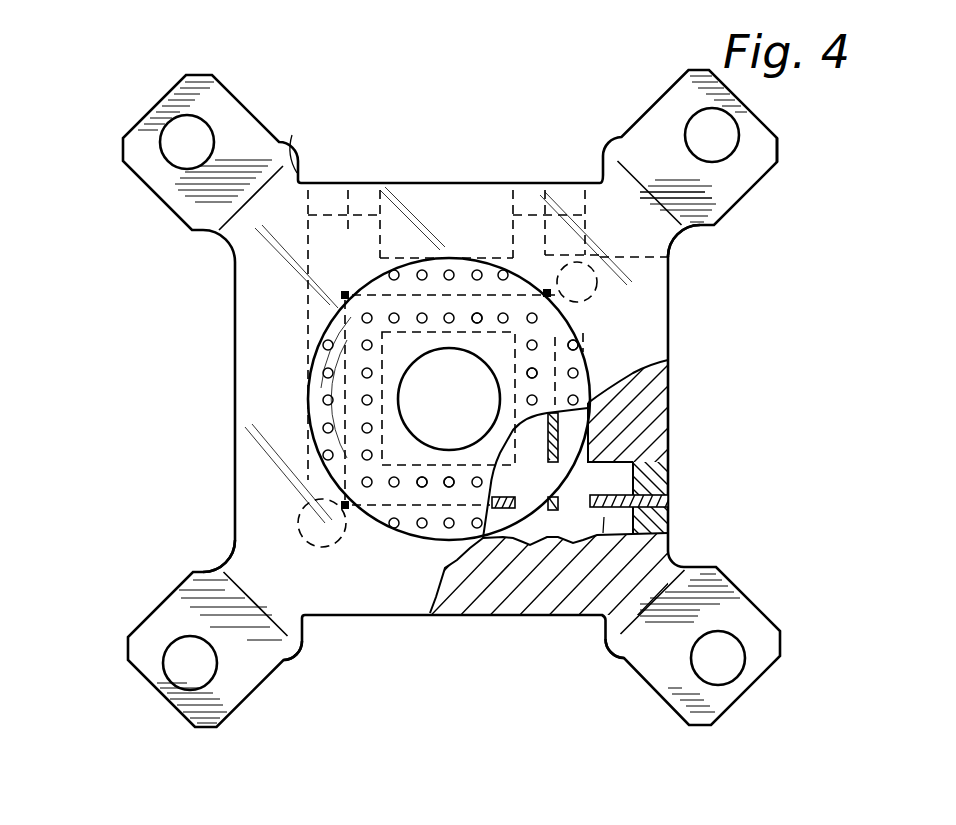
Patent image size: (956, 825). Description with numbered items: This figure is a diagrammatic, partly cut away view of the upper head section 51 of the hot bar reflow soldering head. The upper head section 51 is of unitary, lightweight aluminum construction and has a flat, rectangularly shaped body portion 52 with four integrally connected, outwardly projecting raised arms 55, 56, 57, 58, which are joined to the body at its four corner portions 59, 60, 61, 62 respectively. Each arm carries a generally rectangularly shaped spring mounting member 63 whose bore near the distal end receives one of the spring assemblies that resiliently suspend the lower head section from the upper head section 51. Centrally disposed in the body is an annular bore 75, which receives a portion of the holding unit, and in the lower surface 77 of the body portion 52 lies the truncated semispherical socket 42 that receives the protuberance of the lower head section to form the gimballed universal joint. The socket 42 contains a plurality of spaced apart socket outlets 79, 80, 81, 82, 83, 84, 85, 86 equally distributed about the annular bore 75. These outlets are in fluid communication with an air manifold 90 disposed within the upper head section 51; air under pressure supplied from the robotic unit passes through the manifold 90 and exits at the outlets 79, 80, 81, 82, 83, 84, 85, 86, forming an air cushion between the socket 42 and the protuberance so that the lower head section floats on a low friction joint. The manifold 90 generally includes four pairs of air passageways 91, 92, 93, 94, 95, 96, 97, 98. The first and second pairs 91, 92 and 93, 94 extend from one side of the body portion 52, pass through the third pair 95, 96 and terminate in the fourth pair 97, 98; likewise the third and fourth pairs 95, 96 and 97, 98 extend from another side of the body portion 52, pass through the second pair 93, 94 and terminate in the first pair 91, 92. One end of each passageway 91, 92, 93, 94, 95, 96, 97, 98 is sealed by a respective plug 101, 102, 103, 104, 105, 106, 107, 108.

The socket 42 is at (312, 398).
The upper head section 51 is at (126, 722).
The body portion 52 is at (235, 292).
The arm 55 is at (794, 601).
The arm 56 is at (128, 612).
The arm 57 is at (240, 88).
The arm 58 is at (654, 84).
The corner portion 59 is at (617, 628).
The corner portion 60 is at (248, 568).
The corner portion 61 is at (290, 136).
The corner portion 62 is at (700, 240).
The spring mounting member 63 is at (760, 643).
The annular bore 75 is at (438, 366).
The lower surface 77 is at (311, 640).
The socket outlet 79 is at (325, 425).
The socket outlet 80 is at (335, 463).
The socket outlet 81 is at (449, 313).
The socket outlet 82 is at (477, 313).
The socket outlet 83 is at (578, 345).
The socket outlet 84 is at (585, 362).
The socket outlet 85 is at (447, 487).
The socket outlet 86 is at (421, 487).
The air manifold 90 is at (700, 512).
The air passageway 91 is at (605, 518).
The air passageway 92 is at (610, 483).
The air passageway 93 is at (617, 240).
The air passageway 94 is at (676, 170).
The air passageway 95 is at (577, 445).
The air passageway 96 is at (528, 453).
The air passageway 97 is at (340, 250).
The air passageway 98 is at (307, 227).
The plug 101 is at (668, 524).
The plug 102 is at (668, 481).
The plug 103 is at (668, 310).
The plug 104 is at (668, 280).
The plug 105 is at (586, 255).
The plug 106 is at (545, 255).
The plug 107 is at (367, 182).
The plug 108 is at (332, 182).